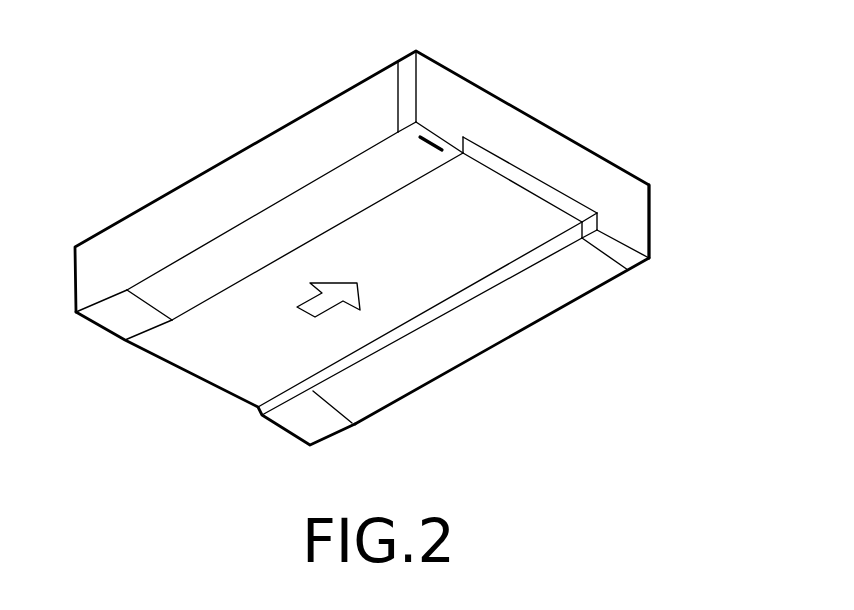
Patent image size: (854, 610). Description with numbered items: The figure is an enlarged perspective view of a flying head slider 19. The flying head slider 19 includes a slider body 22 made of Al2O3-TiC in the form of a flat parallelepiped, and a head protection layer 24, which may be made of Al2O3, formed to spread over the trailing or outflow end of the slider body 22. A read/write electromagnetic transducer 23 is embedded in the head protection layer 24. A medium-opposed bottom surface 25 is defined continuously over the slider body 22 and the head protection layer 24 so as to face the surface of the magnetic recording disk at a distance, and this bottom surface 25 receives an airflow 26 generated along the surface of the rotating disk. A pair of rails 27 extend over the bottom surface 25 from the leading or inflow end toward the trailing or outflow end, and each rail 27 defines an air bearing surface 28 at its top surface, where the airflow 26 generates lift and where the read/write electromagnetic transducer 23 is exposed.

The flying head slider 19 is at (362, 242).
The slider body 22 is at (615, 277).
The read/write electromagnetic transducer 23 is at (426, 139).
The head protection layer 24 is at (652, 202).
The bottom surface 25 is at (405, 288).
The airflow 26 is at (302, 315).
The rail 27 is at (217, 297).
The air bearing surface 28 is at (402, 180).